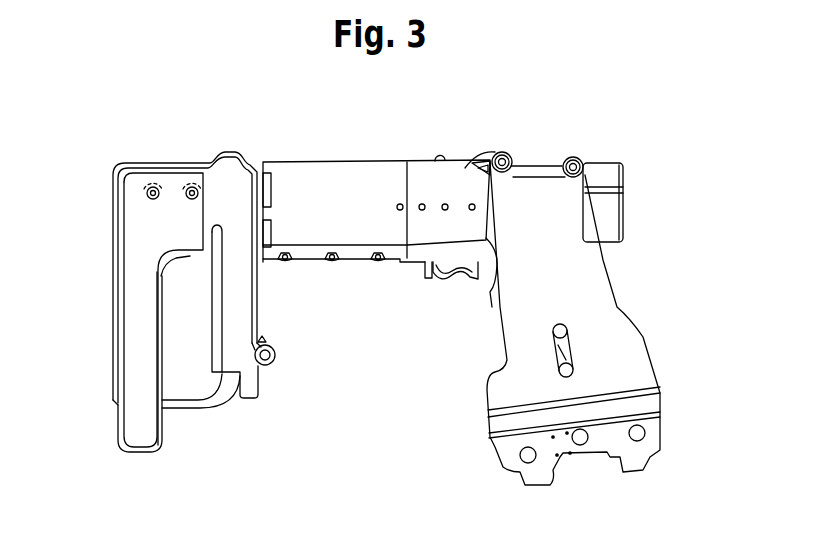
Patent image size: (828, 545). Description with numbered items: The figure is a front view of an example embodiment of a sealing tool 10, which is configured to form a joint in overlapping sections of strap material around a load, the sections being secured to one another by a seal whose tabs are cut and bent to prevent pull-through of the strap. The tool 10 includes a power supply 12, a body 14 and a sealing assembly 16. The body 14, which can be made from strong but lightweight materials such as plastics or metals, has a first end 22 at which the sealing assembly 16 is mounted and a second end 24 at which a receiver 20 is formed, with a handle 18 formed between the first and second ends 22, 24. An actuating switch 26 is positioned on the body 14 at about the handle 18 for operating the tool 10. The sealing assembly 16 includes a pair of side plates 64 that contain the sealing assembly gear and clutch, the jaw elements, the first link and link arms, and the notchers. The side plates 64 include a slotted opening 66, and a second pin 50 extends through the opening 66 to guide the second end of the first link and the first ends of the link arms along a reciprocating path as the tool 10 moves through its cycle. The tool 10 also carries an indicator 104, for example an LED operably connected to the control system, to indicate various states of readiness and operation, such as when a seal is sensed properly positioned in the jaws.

The sealing tool 10 is at (586, 155).
The power supply 12 is at (183, 412).
The body 14 is at (283, 151).
The sealing assembly 16 is at (638, 333).
The handle 18 is at (338, 172).
The receiver 20 is at (143, 410).
The first end 22 is at (465, 166).
The second end 24 is at (267, 160).
The actuating switch 26 is at (453, 278).
The second pin 50 is at (560, 324).
The side plates 64 is at (578, 272).
The slotted opening 66 is at (570, 372).
The indicator 104 is at (440, 155).